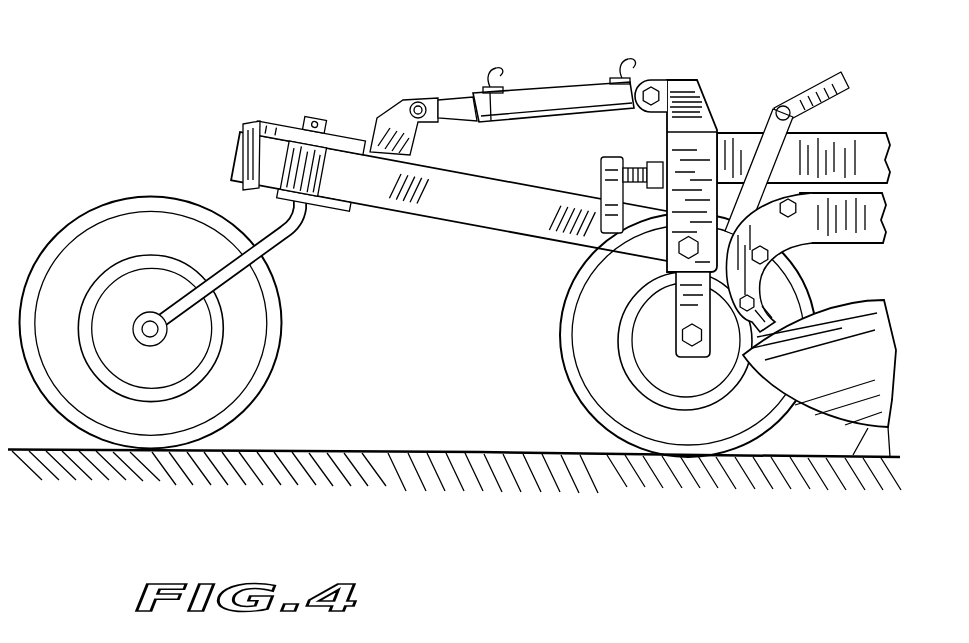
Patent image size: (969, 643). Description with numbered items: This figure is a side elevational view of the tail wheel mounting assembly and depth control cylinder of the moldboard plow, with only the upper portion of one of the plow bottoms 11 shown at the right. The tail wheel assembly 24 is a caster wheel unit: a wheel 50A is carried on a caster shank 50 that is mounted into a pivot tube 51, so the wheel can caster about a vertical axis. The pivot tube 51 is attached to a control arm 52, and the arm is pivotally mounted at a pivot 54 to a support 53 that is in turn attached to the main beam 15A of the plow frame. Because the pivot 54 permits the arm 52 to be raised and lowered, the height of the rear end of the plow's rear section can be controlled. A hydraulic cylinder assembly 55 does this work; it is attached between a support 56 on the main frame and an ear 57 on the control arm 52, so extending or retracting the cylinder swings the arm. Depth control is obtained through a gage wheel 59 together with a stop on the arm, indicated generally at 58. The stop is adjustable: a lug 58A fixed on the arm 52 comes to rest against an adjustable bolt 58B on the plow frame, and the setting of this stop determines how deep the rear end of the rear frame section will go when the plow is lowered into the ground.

The plow bottoms 11 is at (847, 322).
The main beam 15A is at (857, 147).
The tail wheel assembly 24 is at (352, 240).
The caster shank 50 is at (298, 239).
The wheel 50A is at (222, 397).
The pivot tube 51 is at (307, 163).
The control arm 52 is at (500, 212).
The support 53 is at (698, 150).
The pivot 54 is at (679, 249).
The hydraulic cylinder assembly 55 is at (546, 84).
The support 56 is at (682, 92).
The ear 57 is at (390, 117).
The stop 58 is at (595, 176).
The lug 58A is at (603, 183).
The adjustable bolt 58B is at (642, 162).
The gage wheel 59 is at (580, 337).